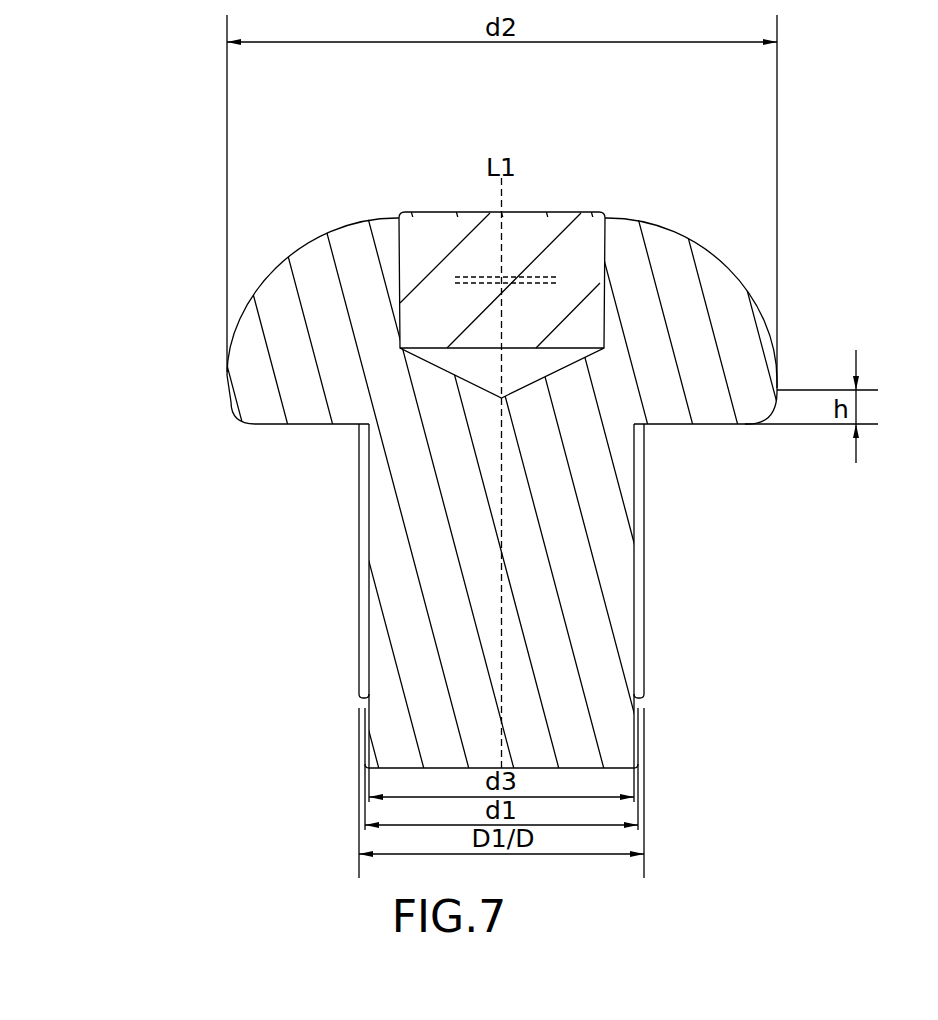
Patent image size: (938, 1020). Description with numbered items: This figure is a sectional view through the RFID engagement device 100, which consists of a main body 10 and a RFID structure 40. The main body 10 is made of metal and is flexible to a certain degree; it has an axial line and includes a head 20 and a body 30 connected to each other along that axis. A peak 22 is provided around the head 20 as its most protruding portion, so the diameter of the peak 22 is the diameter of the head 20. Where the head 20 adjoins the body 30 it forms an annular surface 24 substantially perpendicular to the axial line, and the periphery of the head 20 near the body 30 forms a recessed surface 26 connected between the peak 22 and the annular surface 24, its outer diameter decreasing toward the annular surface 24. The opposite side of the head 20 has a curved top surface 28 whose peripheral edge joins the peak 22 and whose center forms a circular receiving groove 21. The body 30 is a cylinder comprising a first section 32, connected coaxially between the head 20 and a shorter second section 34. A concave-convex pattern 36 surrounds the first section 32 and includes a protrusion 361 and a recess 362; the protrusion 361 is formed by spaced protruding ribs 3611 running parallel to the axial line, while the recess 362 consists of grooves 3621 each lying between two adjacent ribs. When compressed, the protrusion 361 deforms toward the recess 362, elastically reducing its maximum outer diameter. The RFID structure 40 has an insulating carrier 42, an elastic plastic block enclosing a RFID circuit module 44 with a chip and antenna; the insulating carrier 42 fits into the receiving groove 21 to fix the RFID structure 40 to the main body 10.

The RFID engagement device 100 is at (658, 112).
The main body 10 is at (634, 205).
The head 20 is at (672, 218).
The receiving groove 21 is at (400, 237).
The peak 22 is at (777, 390).
The annular surface 24 is at (690, 425).
The recessed surface 26 is at (227, 403).
The curved top surface 28 is at (305, 243).
The body 30 is at (768, 665).
The first section 32 is at (590, 645).
The second section 34 is at (638, 735).
The concave-convex pattern 36 is at (320, 477).
The protrusion 361 is at (344, 566).
The protruding ribs 3611 is at (358, 605).
The recess 362 is at (354, 642).
The grooves 3621 is at (368, 678).
The RFID structure 40 is at (554, 174).
The insulating carrier 42 is at (538, 231).
The RFID circuit module 44 is at (474, 276).